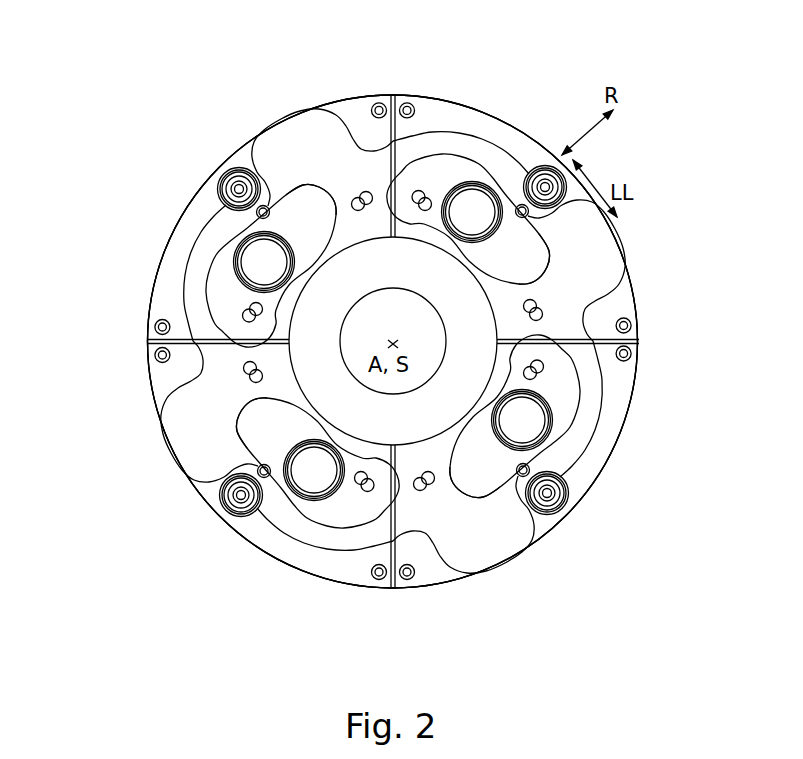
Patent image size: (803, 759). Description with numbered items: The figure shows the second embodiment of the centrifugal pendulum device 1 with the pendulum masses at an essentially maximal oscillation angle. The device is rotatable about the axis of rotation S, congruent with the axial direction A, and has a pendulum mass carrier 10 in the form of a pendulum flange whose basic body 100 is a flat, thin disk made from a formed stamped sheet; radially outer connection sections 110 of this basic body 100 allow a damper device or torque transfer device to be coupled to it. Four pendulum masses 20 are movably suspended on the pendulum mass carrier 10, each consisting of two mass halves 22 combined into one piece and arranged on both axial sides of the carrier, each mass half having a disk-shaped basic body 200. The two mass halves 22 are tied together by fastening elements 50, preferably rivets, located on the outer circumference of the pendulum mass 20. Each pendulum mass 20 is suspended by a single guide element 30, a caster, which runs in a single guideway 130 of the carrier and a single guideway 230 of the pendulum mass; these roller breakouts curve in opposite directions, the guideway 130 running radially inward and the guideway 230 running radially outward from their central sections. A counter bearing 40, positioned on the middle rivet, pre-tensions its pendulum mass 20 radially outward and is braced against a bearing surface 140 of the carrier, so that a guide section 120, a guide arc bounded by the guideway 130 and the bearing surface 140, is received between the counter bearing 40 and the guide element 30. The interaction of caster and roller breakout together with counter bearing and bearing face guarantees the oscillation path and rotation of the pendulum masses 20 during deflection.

The centrifugal pendulum device 1 is at (612, 78).
The pendulum mass carrier 10 is at (438, 563).
The pendulum mass 20 is at (150, 384).
The mass half 22 is at (612, 452).
The guide element 30 is at (472, 210).
The counter bearing 40 is at (226, 175).
The fastening element 50 is at (403, 103).
The basic body 100 is at (313, 323).
The connection section 110 is at (605, 267).
The guide section 120 is at (473, 148).
The guideway 130 is at (430, 155).
The bearing surface 140 is at (610, 400).
The basic body 200 is at (358, 118).
The guideway 230 is at (558, 248).